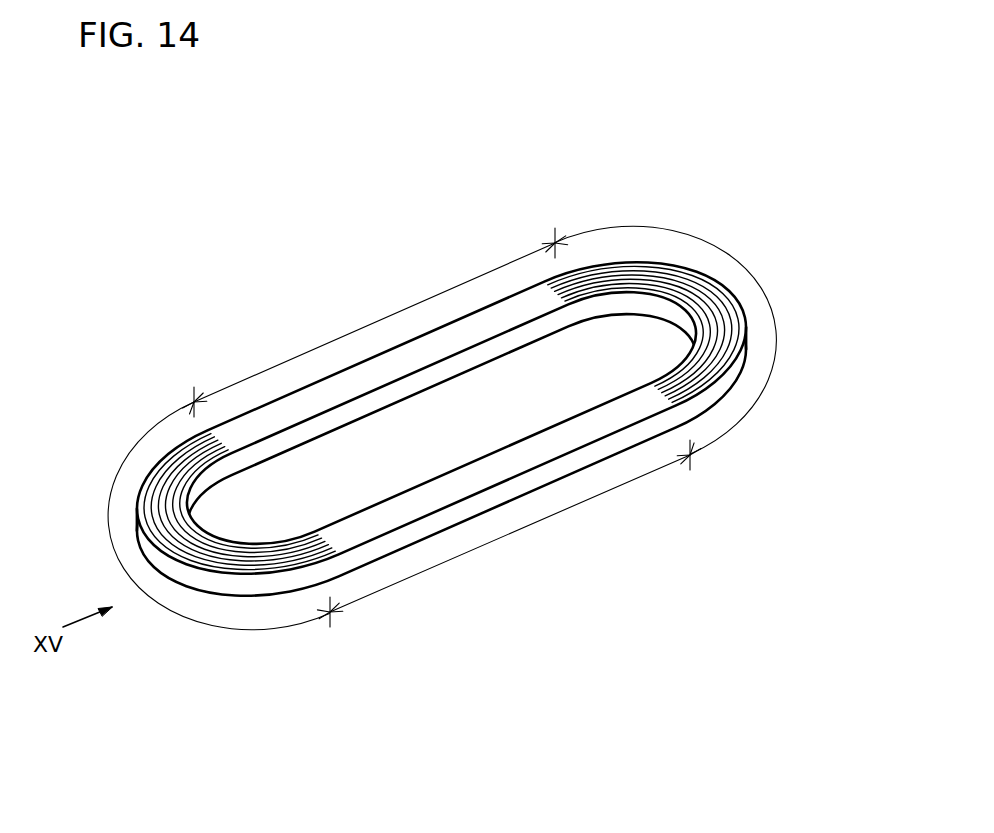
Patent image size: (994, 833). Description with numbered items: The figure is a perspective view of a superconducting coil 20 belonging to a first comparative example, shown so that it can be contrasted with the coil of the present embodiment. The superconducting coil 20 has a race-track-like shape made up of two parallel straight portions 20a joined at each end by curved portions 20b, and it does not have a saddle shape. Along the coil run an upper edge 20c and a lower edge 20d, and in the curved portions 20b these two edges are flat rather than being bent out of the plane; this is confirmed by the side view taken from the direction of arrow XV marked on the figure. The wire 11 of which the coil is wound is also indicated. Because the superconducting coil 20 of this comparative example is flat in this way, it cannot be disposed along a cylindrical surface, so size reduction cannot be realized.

The superconducting coil 20 is at (742, 185).
The straight portions 20a is at (442, 427).
The curved portions 20b is at (442, 428).
The upper edge 20c is at (217, 553).
The lower edge 20d is at (213, 597).
The wire 11 is at (158, 478).